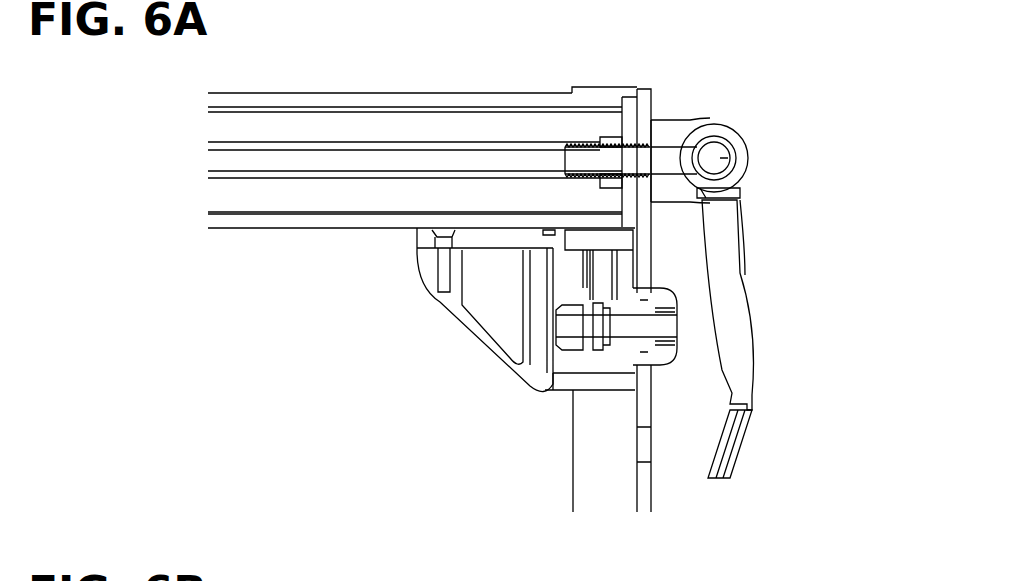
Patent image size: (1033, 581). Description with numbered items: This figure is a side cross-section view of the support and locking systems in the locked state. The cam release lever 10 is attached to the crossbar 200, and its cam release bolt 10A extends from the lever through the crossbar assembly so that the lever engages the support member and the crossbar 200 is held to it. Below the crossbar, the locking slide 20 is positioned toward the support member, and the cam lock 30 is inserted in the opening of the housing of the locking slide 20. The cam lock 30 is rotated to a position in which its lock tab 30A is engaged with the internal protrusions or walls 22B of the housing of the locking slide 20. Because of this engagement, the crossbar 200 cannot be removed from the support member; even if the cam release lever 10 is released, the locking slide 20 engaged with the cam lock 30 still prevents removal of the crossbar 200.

The crossbar 200 is at (291, 192).
The cam release bolt 10A is at (603, 157).
The cam release lever 10 is at (723, 284).
The internal protrusions or walls 22B is at (598, 272).
The locking slide 20 is at (480, 333).
The lock tab 30A is at (580, 347).
The cam lock 30 is at (607, 323).